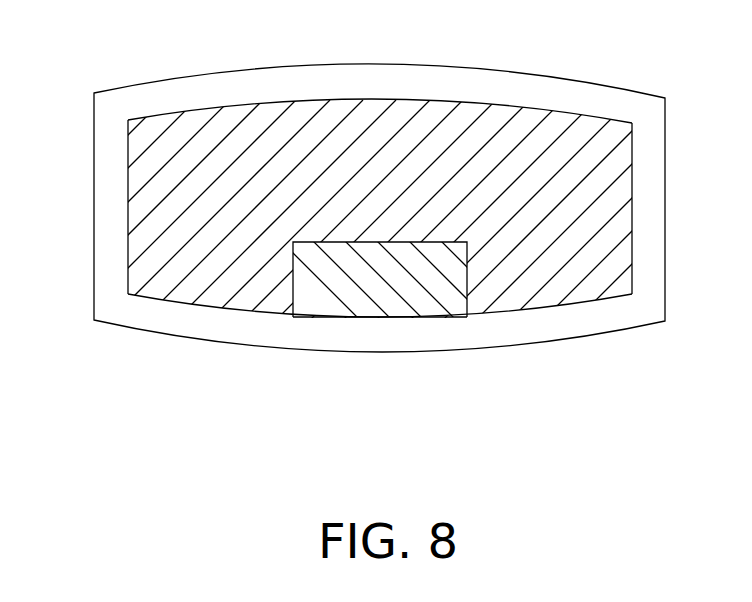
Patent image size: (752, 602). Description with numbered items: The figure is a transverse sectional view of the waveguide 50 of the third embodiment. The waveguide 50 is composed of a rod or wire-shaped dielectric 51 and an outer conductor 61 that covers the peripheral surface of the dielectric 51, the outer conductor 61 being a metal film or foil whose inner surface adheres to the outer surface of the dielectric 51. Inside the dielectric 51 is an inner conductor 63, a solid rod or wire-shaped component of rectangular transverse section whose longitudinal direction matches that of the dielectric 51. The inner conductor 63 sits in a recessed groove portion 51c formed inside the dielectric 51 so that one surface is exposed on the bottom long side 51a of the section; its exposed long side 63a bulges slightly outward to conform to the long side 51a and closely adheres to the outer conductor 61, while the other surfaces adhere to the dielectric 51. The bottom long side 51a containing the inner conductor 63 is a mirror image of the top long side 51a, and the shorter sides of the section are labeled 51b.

The waveguide 50 is at (638, 55).
The dielectric 51 is at (615, 162).
The long side 51a is at (475, 100).
The side surfaces of magnet 51b is at (128, 170).
The recessed groove portion 51c is at (345, 237).
The outer conductor 61 is at (655, 263).
The inner conductor 63 is at (355, 292).
The long side 63a is at (415, 316).